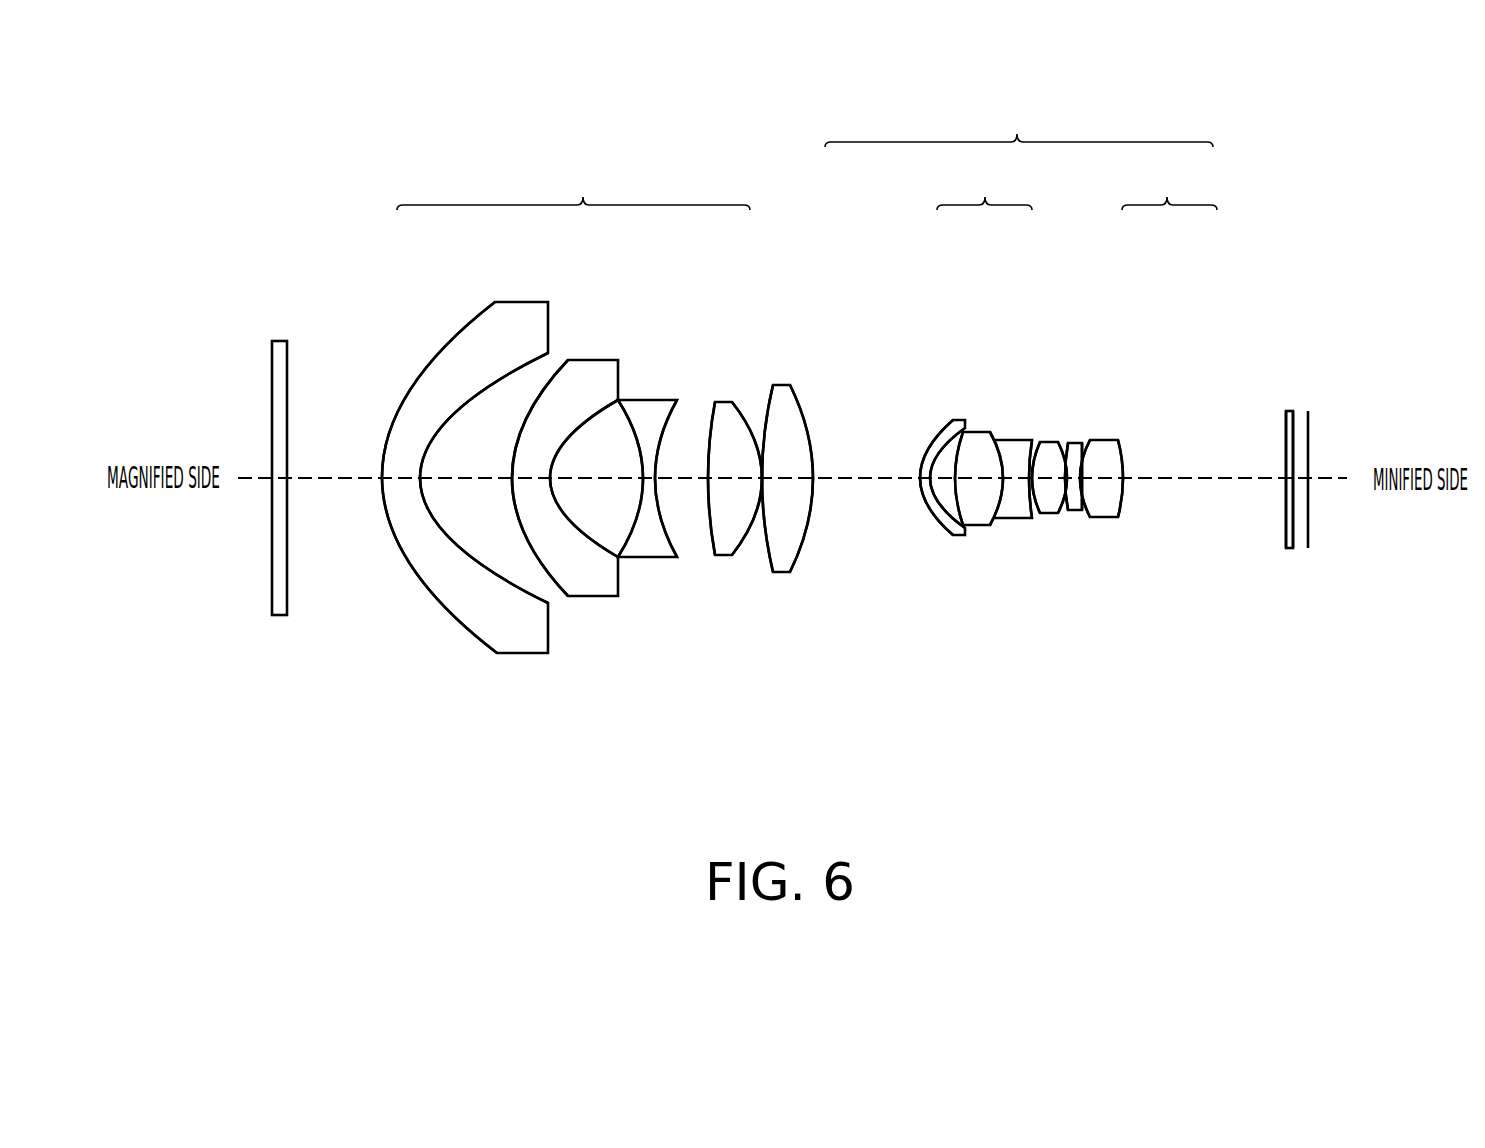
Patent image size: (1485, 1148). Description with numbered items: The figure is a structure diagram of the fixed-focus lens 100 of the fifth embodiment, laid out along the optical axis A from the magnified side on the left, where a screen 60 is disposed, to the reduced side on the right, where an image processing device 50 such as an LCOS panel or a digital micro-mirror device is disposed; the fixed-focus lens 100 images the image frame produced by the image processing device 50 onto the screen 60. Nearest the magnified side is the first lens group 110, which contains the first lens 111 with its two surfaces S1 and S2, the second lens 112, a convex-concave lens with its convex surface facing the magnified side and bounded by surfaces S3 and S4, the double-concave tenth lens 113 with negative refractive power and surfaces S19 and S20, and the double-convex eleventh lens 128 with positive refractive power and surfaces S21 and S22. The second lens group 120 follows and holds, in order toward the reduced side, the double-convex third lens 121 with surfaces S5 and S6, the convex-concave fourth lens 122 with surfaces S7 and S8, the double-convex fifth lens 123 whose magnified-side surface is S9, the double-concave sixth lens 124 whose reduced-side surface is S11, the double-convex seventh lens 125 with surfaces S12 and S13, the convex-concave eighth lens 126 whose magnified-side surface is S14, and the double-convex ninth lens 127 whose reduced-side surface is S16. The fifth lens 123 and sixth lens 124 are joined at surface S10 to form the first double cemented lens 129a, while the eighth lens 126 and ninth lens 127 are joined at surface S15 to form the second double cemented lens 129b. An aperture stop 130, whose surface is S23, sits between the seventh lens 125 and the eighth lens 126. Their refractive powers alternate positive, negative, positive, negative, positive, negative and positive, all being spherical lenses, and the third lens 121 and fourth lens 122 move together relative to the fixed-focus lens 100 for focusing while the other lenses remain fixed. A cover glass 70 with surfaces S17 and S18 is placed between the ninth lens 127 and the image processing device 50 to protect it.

The fixed-focus lens 100 is at (1428, 772).
The first lens group 110 is at (573, 181).
The second lens group 120 is at (1019, 118).
The first lens 111 is at (484, 347).
The second lens 112 is at (590, 388).
The tenth lens 113 is at (648, 418).
The eleventh lens 128 is at (727, 420).
The third lens 121 is at (785, 395).
The fourth lens 122 is at (943, 427).
The fifth lens 123 is at (985, 445).
The sixth lens 124 is at (1020, 453).
The seventh lens 125 is at (1047, 453).
The eighth lens 126 is at (1082, 453).
The ninth lens 127 is at (1105, 460).
The first double cemented lens 129a is at (984, 181).
The second double cemented lens 129b is at (1169, 181).
The aperture stop 130 is at (1074, 498).
The screen 60 is at (280, 578).
The cover glass 70 is at (1290, 440).
The image processing device 50 is at (1308, 548).
The optical axis A is at (681, 470).
The surface S1 is at (424, 598).
The surface S2 is at (442, 537).
The surface S3 is at (526, 545).
The surface S4 is at (558, 510).
The surface S5 is at (767, 548).
The surface S6 is at (808, 543).
The surface S7 is at (942, 533).
The surface S8 is at (944, 509).
The surface S9 is at (959, 493).
The surface S10 is at (1001, 490).
The surface S11 is at (1026, 503).
The surface S12 is at (1033, 491).
The surface S13 is at (1056, 494).
The surface S14 is at (1065, 500).
The surface S15 is at (1088, 496).
The surface S16 is at (1129, 488).
The surface S17 is at (1284, 517).
The surface S18 is at (1297, 493).
The surface S19 is at (636, 507).
The surface S20 is at (666, 522).
The surface S21 is at (709, 508).
The surface S22 is at (746, 528).
The surface S23 is at (1065, 440).